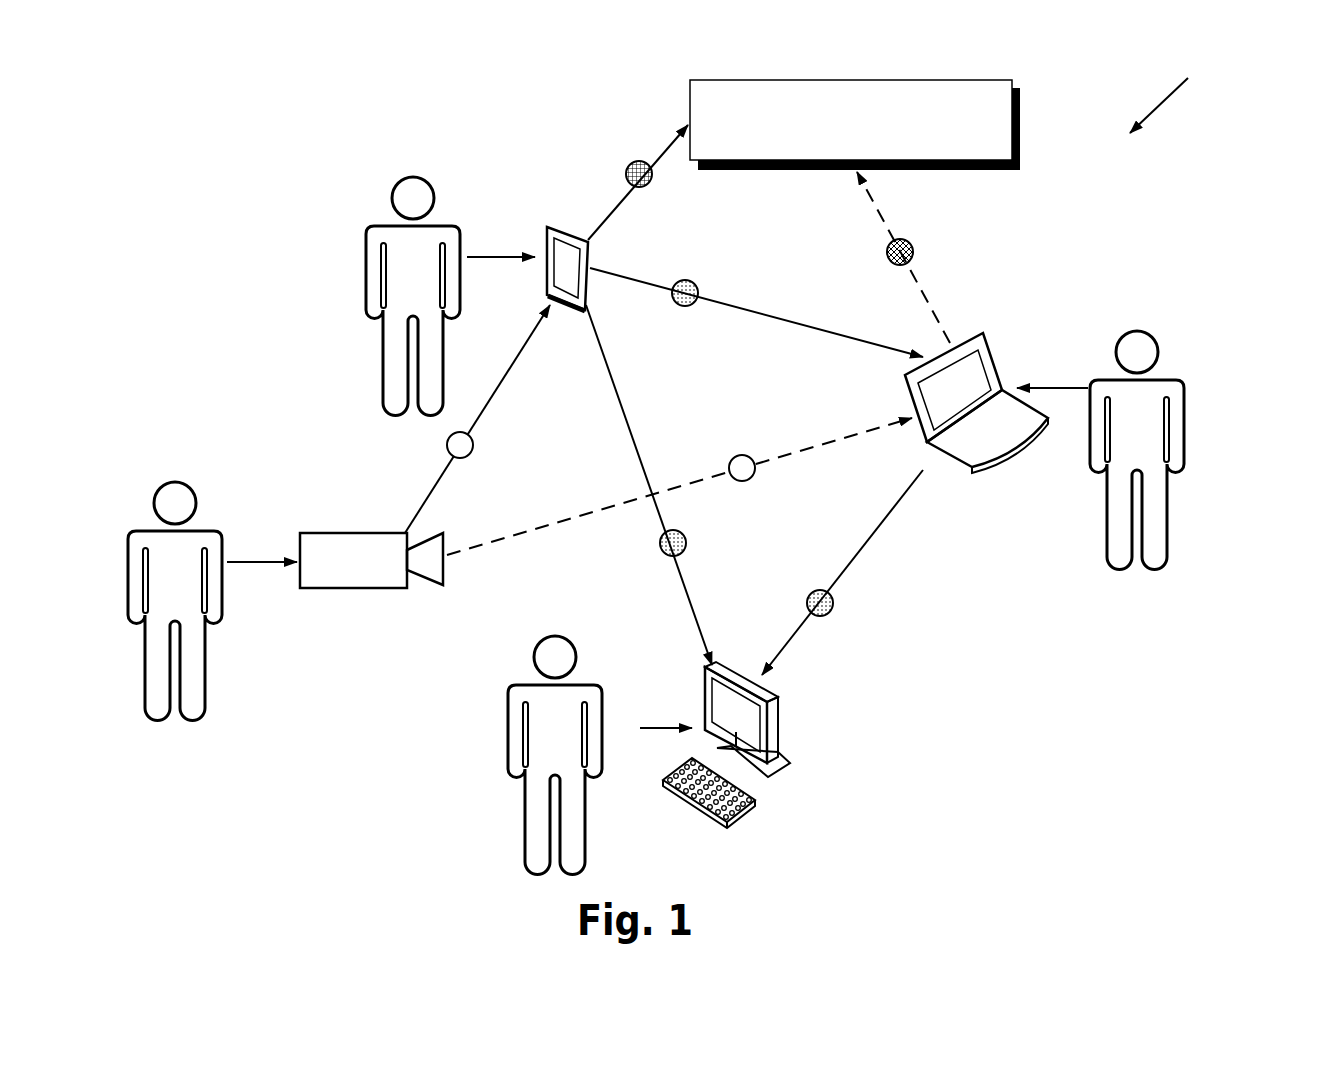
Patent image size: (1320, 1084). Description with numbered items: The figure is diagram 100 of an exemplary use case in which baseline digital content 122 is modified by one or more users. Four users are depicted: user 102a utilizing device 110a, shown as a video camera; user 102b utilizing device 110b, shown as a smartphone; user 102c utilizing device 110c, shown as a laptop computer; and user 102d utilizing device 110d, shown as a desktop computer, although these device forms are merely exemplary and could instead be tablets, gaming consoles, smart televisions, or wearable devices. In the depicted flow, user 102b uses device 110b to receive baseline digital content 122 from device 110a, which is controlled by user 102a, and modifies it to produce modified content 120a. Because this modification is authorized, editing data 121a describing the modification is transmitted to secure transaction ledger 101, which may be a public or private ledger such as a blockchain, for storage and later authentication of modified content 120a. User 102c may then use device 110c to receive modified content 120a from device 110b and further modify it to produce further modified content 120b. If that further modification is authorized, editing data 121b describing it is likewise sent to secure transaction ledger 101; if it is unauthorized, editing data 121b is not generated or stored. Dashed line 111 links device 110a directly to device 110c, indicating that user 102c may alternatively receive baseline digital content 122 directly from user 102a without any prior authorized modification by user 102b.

The diagram 100 is at (1177, 92).
The secure transaction ledger 101 is at (932, 167).
The user 102a is at (218, 532).
The user 102b is at (367, 262).
The user 102c is at (1186, 410).
The user 102d is at (510, 727).
The device 110a is at (337, 590).
The device 110b is at (553, 225).
The device 110c is at (965, 472).
The device 110d is at (778, 723).
The dashed line 111 is at (515, 548).
The modified content 120a is at (687, 282).
The further modified content 120b is at (834, 603).
The editing data 121a is at (630, 162).
The editing data 121b is at (890, 265).
The baseline digital content 122 is at (474, 445).